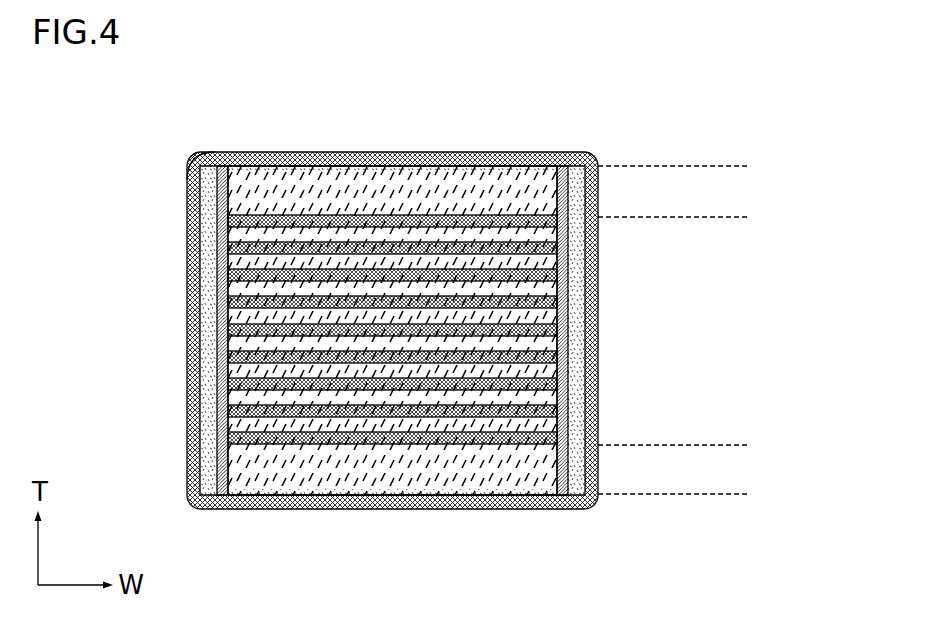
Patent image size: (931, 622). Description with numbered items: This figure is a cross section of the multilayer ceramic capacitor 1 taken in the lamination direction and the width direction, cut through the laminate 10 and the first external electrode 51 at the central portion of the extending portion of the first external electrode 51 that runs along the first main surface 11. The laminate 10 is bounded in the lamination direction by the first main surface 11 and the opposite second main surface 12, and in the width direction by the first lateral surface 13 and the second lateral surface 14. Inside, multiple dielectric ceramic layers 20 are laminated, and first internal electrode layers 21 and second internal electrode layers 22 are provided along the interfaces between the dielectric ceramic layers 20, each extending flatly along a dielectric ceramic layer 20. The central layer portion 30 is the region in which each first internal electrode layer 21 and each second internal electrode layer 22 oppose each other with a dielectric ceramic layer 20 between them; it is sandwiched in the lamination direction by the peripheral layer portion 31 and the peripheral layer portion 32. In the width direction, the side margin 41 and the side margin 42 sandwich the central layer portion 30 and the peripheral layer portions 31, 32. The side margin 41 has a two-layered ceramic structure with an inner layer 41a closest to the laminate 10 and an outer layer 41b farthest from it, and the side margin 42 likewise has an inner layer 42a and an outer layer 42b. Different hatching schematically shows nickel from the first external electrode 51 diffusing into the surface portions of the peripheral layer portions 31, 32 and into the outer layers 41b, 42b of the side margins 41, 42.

The multilayer ceramic capacitor 1 is at (150, 128).
The laminate 10 is at (526, 151).
The first main surface 11 is at (293, 153).
The second main surface 12 is at (498, 496).
The first lateral surface 13 is at (197, 382).
The second lateral surface 14 is at (588, 388).
The dielectric ceramic layers 20 is at (392, 331).
The first internal electrode layer 21 is at (408, 325).
The second internal electrode layer 22 is at (455, 300).
The central layer portion 30 is at (752, 217).
The peripheral layer portion 31 is at (752, 166).
The peripheral layer portion 32 is at (752, 445).
The side margin 41 is at (134, 330).
The inner layer 41a is at (224, 231).
The outer layer 41b is at (212, 272).
The side margin 42 is at (650, 330).
The inner layer 42a is at (563, 277).
The outer layer 42b is at (575, 318).
The first external electrode 51 is at (226, 153).